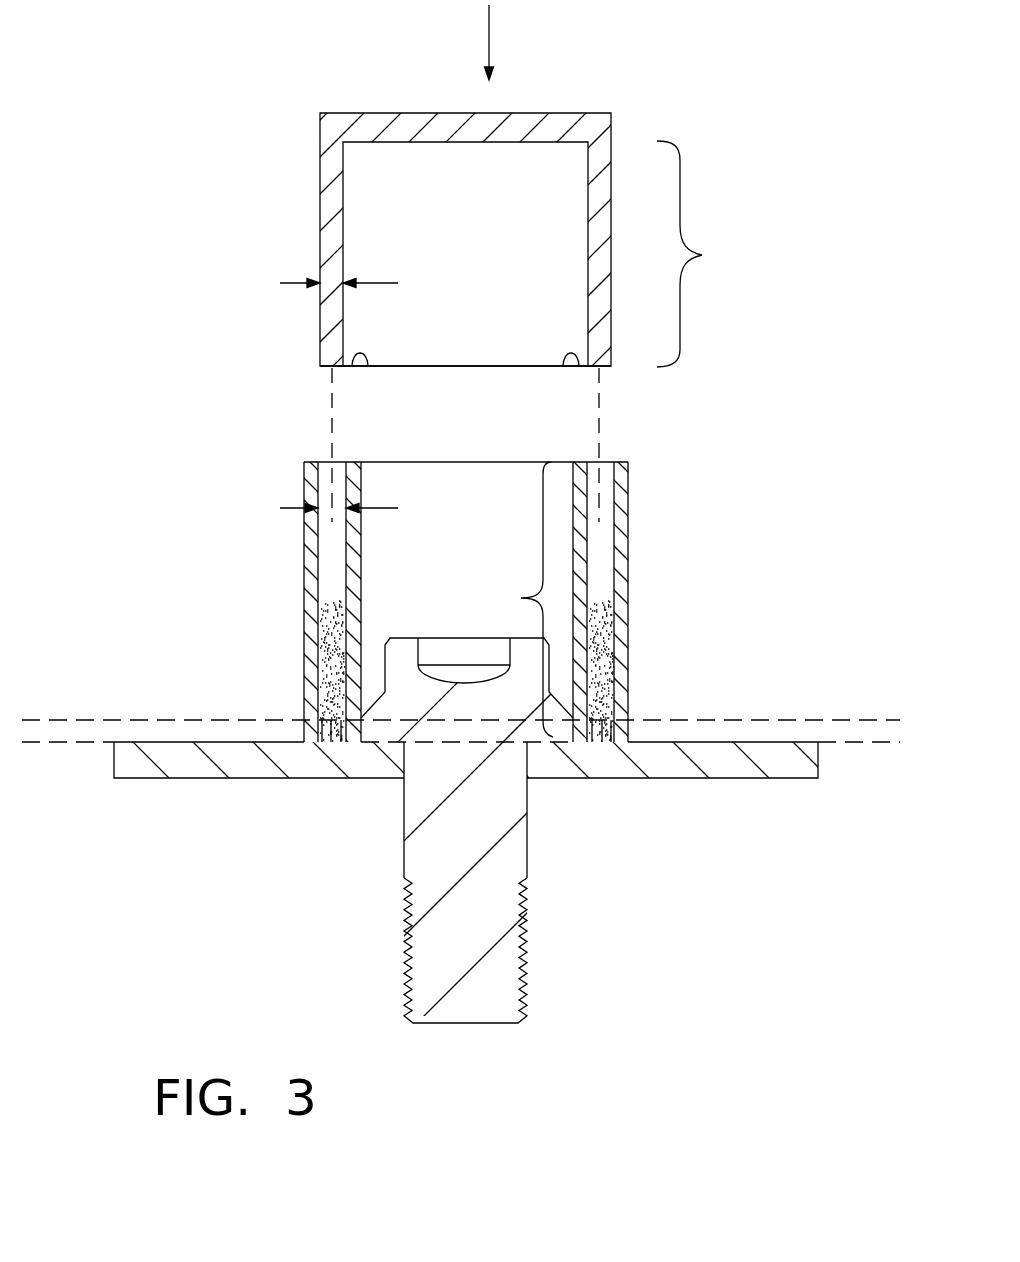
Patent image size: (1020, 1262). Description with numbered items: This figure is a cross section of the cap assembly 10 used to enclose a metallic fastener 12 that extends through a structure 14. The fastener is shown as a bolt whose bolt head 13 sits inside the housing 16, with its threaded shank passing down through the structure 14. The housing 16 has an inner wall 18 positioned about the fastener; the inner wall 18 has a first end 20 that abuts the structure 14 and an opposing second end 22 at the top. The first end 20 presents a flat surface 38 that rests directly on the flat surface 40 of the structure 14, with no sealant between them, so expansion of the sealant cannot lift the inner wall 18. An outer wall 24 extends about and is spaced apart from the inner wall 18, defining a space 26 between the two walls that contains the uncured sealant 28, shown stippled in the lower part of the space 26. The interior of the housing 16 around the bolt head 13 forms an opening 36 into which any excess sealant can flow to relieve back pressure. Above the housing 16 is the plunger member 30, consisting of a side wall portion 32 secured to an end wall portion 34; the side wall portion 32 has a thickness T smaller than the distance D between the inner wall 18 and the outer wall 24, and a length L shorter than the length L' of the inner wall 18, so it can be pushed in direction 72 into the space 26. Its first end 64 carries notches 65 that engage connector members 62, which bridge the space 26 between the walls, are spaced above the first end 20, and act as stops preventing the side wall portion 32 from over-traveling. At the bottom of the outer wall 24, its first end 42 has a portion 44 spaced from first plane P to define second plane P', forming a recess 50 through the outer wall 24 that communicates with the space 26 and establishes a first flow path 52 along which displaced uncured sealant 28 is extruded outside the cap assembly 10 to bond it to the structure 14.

The cap assembly 10 is at (731, 72).
The metallic fastener 12 is at (460, 818).
The bolt head 13 is at (480, 693).
The structure 14 is at (462, 740).
The housing 16 is at (461, 622).
The inner wall 18 is at (361, 560).
The first end 20 is at (352, 748).
The opposing second end 22 is at (357, 470).
The outer wall 24 is at (307, 573).
The space 26 is at (320, 552).
The uncured sealant 28 is at (320, 608).
The plunger member 30 is at (459, 233).
The side wall portion 32 is at (333, 188).
The end wall portion 34 is at (400, 122).
The opening 36 is at (489, 500).
The flat surface 38 is at (358, 748).
The surface 40 is at (118, 742).
The first end 42 is at (318, 752).
The portion 44 is at (317, 733).
The recess 50 is at (297, 752).
The first flow path 52 is at (315, 730).
The connector member 62 is at (310, 637).
The first end 64 is at (322, 370).
The notches 65 is at (362, 350).
The direction 72 is at (489, 30).